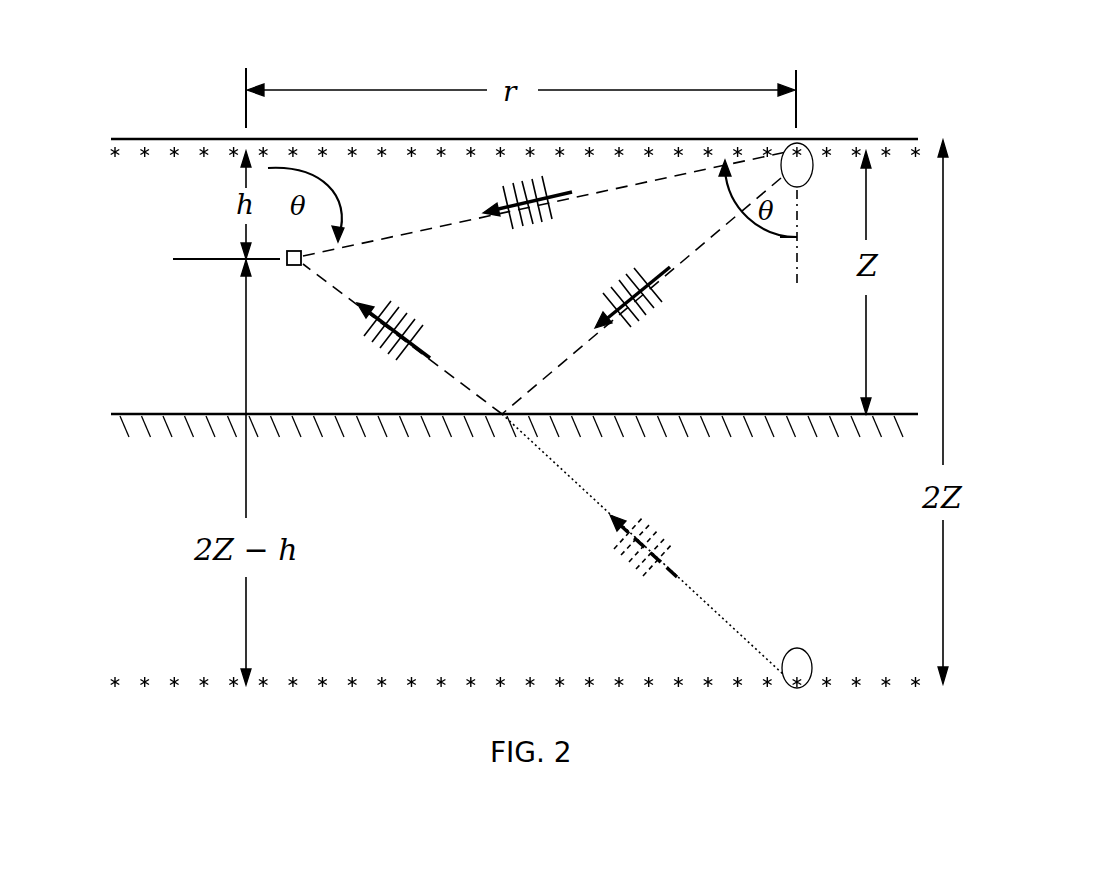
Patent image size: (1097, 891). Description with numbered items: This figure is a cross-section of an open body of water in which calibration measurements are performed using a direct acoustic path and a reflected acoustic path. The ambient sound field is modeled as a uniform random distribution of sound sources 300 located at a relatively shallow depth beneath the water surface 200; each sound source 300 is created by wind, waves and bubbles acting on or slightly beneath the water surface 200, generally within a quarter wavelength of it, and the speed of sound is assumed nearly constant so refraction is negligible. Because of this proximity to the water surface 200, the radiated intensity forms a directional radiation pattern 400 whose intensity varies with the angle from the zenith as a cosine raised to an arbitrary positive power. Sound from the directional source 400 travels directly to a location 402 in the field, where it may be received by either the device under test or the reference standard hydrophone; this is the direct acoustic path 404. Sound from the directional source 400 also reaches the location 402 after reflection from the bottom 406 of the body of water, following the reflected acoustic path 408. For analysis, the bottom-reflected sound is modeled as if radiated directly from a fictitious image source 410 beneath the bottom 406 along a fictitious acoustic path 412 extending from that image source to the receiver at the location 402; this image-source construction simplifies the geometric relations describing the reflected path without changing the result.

The water surface 200 is at (167, 137).
The sound sources 300 is at (145, 158).
The directional radiation pattern 400 is at (807, 147).
The location 402 is at (293, 267).
The direct acoustic path 404 is at (571, 194).
The bottom 406 is at (662, 413).
The reflected acoustic path 408 is at (577, 350).
The image source 410 is at (798, 648).
The fictitious acoustic path 412 is at (695, 590).